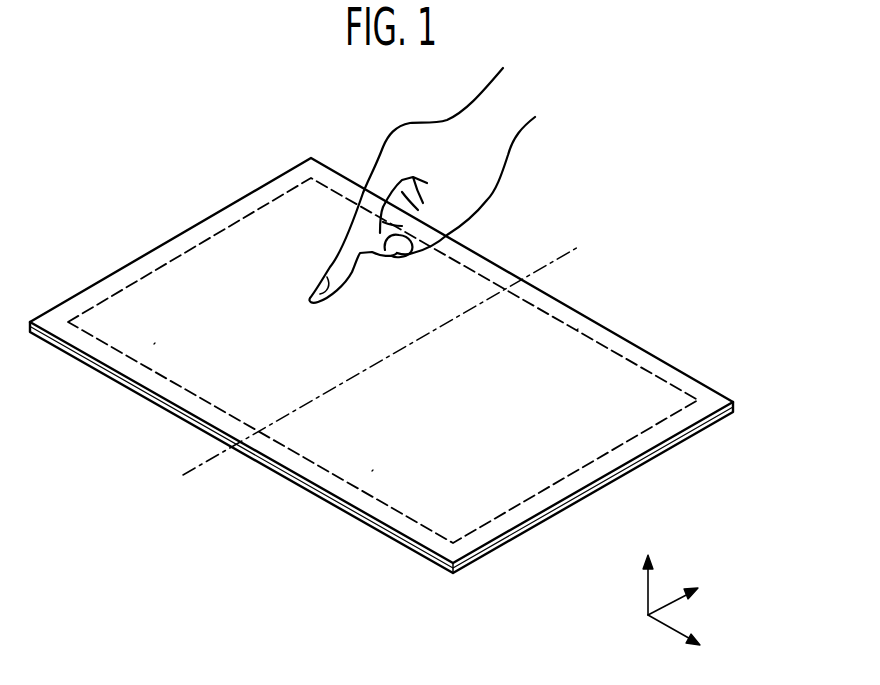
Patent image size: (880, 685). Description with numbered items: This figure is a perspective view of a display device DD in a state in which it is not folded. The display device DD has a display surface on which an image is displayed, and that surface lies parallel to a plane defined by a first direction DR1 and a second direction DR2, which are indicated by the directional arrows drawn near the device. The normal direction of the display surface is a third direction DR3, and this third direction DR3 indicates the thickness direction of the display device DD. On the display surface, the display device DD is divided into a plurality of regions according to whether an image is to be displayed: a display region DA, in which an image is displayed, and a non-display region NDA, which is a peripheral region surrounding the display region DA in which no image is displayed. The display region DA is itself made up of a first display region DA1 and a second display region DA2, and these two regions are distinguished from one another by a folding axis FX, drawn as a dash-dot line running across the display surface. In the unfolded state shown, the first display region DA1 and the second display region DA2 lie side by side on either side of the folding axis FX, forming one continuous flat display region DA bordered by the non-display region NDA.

The display device DD is at (690, 183).
The display region DA is at (577, 330).
The non-display region NDA is at (640, 355).
The first display region DA1 is at (155, 343).
The second display region DA2 is at (373, 470).
The folding axis FX is at (368, 369).
The first direction DR1 is at (694, 642).
The second direction DR2 is at (693, 592).
The third direction DR3 is at (648, 567).